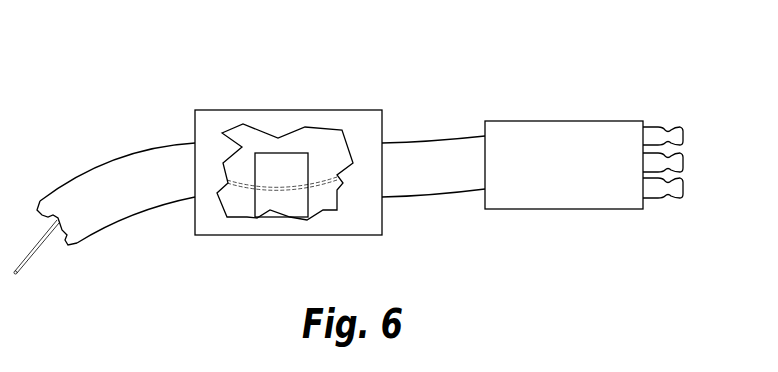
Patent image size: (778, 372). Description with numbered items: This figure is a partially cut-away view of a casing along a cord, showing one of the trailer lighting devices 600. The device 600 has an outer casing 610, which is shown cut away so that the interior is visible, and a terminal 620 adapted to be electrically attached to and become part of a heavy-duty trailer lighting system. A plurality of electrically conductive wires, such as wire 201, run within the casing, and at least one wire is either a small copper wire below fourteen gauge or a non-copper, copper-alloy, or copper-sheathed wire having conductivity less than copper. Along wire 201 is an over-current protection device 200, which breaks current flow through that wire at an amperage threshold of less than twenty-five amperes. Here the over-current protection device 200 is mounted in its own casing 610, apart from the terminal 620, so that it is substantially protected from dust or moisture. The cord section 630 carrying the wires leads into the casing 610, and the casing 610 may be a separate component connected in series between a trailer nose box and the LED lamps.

The device 600 is at (322, 88).
The casing 610 is at (350, 111).
The terminal 620 is at (577, 175).
The curved cable section 630 is at (115, 168).
The over-current protection device 200 is at (297, 197).
The wire 201 is at (32, 250).